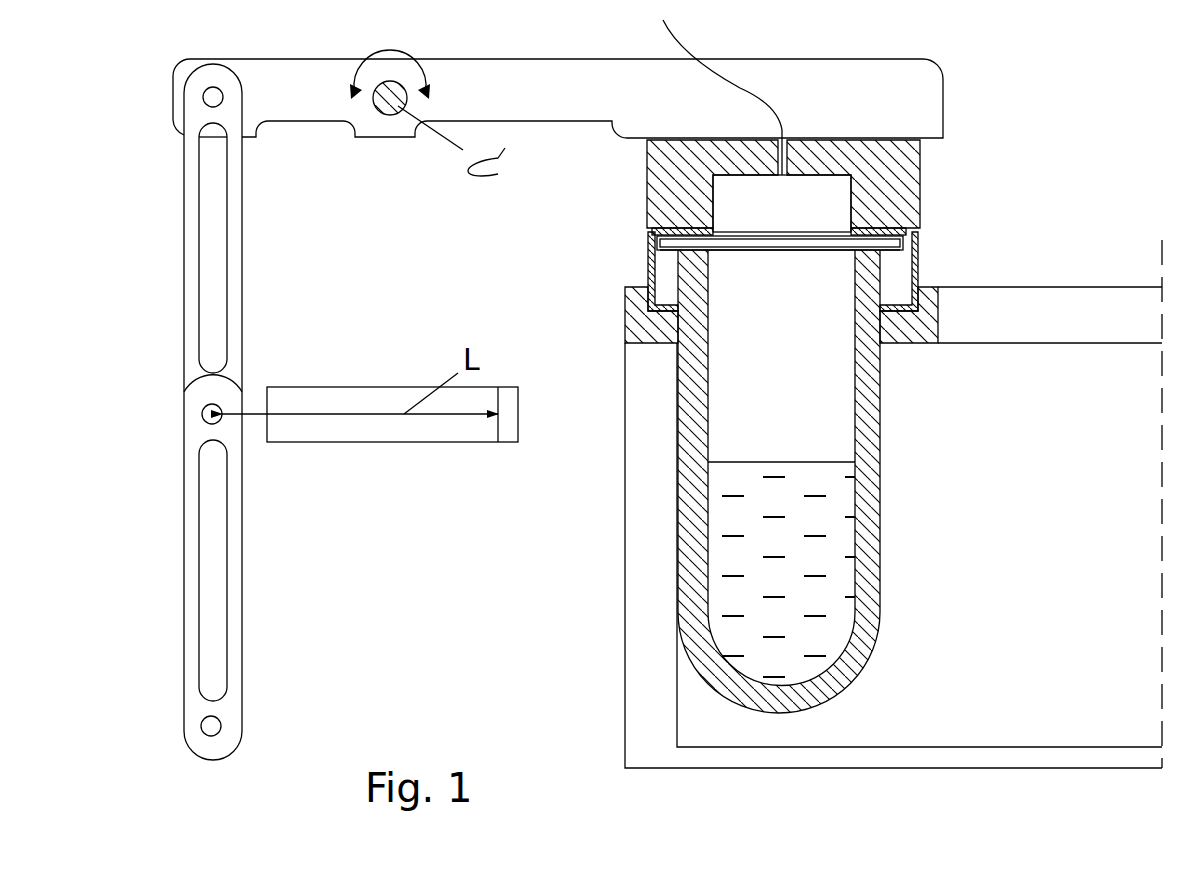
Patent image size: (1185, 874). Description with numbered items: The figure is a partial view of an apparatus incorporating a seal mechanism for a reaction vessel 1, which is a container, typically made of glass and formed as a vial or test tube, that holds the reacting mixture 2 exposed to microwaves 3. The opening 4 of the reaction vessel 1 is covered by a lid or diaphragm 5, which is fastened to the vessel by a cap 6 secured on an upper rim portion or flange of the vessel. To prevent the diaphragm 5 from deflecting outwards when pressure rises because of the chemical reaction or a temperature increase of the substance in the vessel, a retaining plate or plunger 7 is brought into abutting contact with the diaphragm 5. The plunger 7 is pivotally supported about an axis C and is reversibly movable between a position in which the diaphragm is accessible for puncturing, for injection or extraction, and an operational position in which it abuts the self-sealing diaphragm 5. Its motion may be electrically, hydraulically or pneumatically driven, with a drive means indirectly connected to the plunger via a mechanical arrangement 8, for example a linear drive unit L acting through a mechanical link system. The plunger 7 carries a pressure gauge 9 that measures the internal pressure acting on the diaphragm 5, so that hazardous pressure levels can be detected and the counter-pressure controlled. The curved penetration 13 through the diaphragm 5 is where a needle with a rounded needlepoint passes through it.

The reaction vessel 1 is at (883, 400).
The reacting mixture 2 is at (830, 545).
The microwaves 3 is at (963, 583).
The opening 4 is at (710, 253).
The diaphragm 5 is at (888, 245).
The cap 6 is at (893, 298).
The plunger 7 is at (917, 185).
The mechanical arrangement 8 is at (256, 339).
The pressure gauge 9 is at (794, 221).
The curved penetration 13 is at (785, 240).